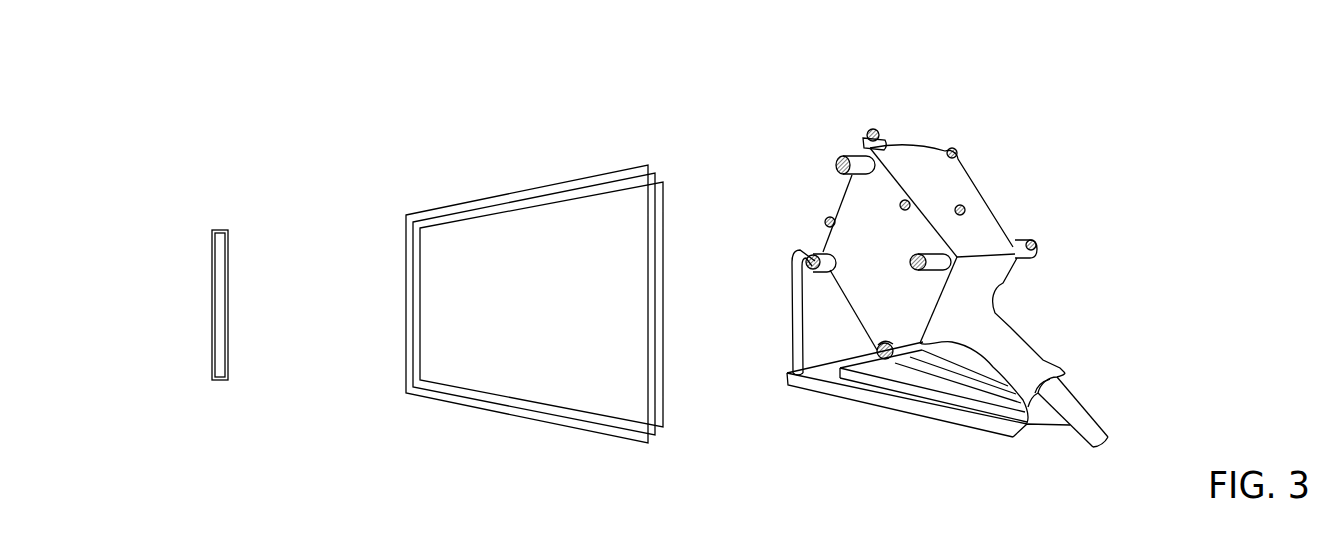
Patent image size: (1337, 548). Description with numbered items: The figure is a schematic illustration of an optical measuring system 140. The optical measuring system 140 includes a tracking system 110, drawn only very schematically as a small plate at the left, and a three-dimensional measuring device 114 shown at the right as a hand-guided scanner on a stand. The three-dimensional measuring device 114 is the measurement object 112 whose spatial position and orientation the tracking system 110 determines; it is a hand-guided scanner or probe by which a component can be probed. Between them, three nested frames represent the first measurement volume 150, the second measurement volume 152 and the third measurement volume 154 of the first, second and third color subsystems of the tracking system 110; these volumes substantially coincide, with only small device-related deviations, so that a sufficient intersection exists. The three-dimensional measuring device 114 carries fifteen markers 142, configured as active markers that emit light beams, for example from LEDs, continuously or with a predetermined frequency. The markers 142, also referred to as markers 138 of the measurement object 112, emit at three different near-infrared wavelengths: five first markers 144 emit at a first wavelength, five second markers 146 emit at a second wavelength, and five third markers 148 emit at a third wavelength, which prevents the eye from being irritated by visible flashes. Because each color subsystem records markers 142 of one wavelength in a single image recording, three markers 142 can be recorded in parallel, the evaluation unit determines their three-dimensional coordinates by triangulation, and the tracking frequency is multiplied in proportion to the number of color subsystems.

The tracking system 110 is at (181, 290).
The optical measuring system 140 is at (332, 177).
The first measurement volume 150 is at (628, 168).
The second measurement volume 152 is at (657, 173).
The third measurement volume 154 is at (664, 203).
The measurement object 112 is at (1034, 271).
The 3D measuring device 114 is at (1100, 305).
The markers 138 is at (1093, 176).
The markers 142 is at (1093, 176).
The first marker 144 is at (955, 151).
The second marker 146 is at (965, 207).
The third marker 148 is at (1038, 243).